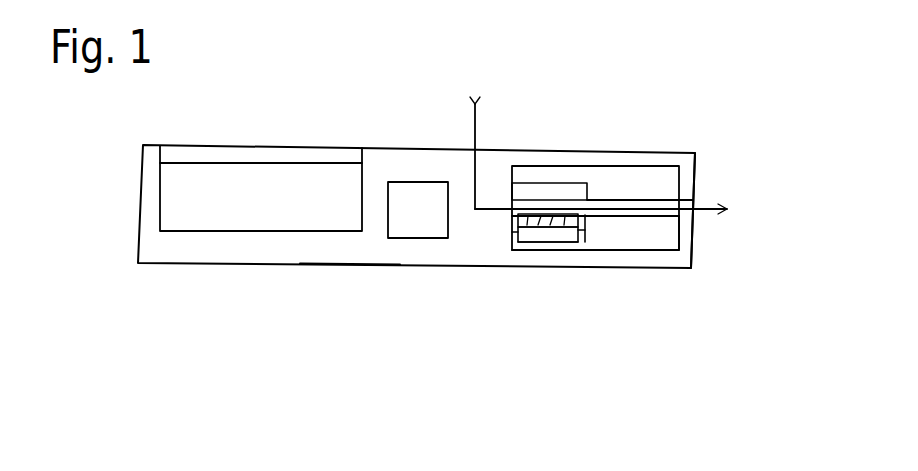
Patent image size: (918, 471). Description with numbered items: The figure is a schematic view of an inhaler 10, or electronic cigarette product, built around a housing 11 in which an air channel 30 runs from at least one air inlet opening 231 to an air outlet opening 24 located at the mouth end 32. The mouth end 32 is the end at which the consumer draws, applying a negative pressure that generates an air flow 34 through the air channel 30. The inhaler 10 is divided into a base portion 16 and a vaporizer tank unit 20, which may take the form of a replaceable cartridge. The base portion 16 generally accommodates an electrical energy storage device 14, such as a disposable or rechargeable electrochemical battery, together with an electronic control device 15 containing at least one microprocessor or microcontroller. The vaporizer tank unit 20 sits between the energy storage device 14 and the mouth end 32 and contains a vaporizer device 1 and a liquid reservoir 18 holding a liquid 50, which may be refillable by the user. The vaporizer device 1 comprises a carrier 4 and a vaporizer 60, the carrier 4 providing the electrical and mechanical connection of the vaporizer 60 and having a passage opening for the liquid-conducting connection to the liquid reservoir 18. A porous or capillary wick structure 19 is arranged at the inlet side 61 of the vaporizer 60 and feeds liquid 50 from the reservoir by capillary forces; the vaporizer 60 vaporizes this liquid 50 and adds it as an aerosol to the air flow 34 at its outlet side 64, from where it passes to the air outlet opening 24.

The vaporizer device 1 is at (550, 256).
The carrier 4 is at (510, 233).
The inhaler 10 is at (385, 362).
The housing 11 is at (235, 263).
The electrical energy storage device 14 is at (262, 208).
The electronic control device 15 is at (432, 228).
The base portion 16 is at (351, 270).
The liquid reservoir 18 is at (643, 256).
The wick structure 19 is at (562, 242).
The vaporizer tank unit 20 is at (611, 265).
The air outlet opening 24 is at (693, 210).
The air channel 30 is at (679, 222).
The mouth end 32 is at (697, 170).
The air flow 34 is at (473, 185).
The liquid 50 is at (668, 197).
The vaporizer 60 is at (535, 228).
The inlet side 61 is at (545, 259).
The outlet side 64 is at (538, 240).
The air inlet opening 231 is at (477, 146).